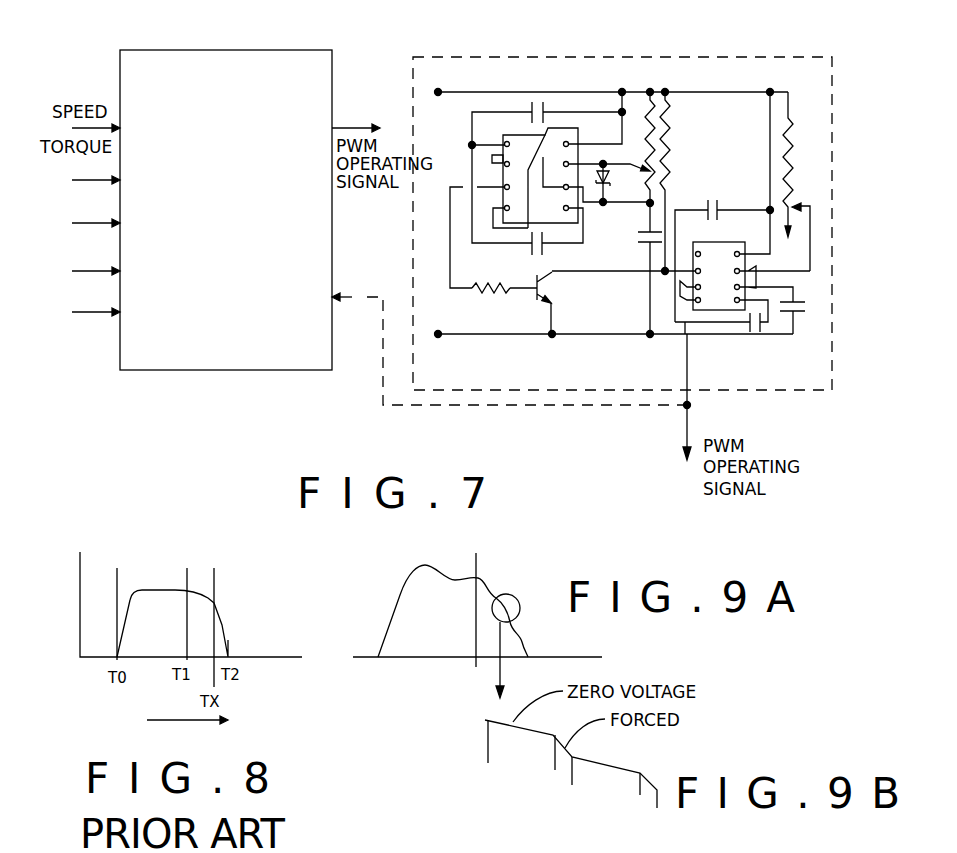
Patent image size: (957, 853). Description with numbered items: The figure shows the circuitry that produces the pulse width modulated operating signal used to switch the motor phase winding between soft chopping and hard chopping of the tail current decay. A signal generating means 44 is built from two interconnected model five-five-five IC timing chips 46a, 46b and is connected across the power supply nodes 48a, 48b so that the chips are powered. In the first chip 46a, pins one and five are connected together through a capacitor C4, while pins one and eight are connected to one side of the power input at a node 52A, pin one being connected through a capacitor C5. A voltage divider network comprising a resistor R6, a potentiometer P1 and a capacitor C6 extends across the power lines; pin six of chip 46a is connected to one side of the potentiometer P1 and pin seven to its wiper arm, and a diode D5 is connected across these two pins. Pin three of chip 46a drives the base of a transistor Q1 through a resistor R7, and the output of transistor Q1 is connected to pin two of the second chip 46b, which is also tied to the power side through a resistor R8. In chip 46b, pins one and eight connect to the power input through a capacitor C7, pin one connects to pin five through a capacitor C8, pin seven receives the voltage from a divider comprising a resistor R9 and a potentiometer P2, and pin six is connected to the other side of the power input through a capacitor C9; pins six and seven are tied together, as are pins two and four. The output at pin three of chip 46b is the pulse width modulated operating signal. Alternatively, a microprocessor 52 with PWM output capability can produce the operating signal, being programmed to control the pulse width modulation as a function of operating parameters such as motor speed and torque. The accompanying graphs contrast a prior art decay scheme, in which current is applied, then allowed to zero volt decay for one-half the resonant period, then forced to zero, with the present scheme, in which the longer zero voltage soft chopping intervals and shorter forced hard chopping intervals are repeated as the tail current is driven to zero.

The microprocessor 52 is at (197, 50).
The signal generating means 44 is at (620, 50).
The power supply node 48a is at (438, 90).
The power supply node 48b is at (438, 336).
The node 52A is at (622, 90).
The IC timing chip 46a is at (503, 137).
The IC timing chip 46b is at (712, 242).
The capacitor C4 is at (546, 254).
The capacitor C5 is at (531, 106).
The capacitor C6 is at (641, 244).
The capacitor C7 is at (719, 208).
The capacitor C8 is at (753, 331).
The capacitor C9 is at (805, 315).
The resistor R6 is at (655, 140).
The resistor R7 is at (487, 296).
The resistor R8 is at (668, 168).
The resistor R9 is at (793, 150).
The potentiometer P1 is at (626, 182).
The potentiometer P2 is at (804, 205).
The diode D5 is at (612, 193).
The transistor Q1 is at (546, 280).